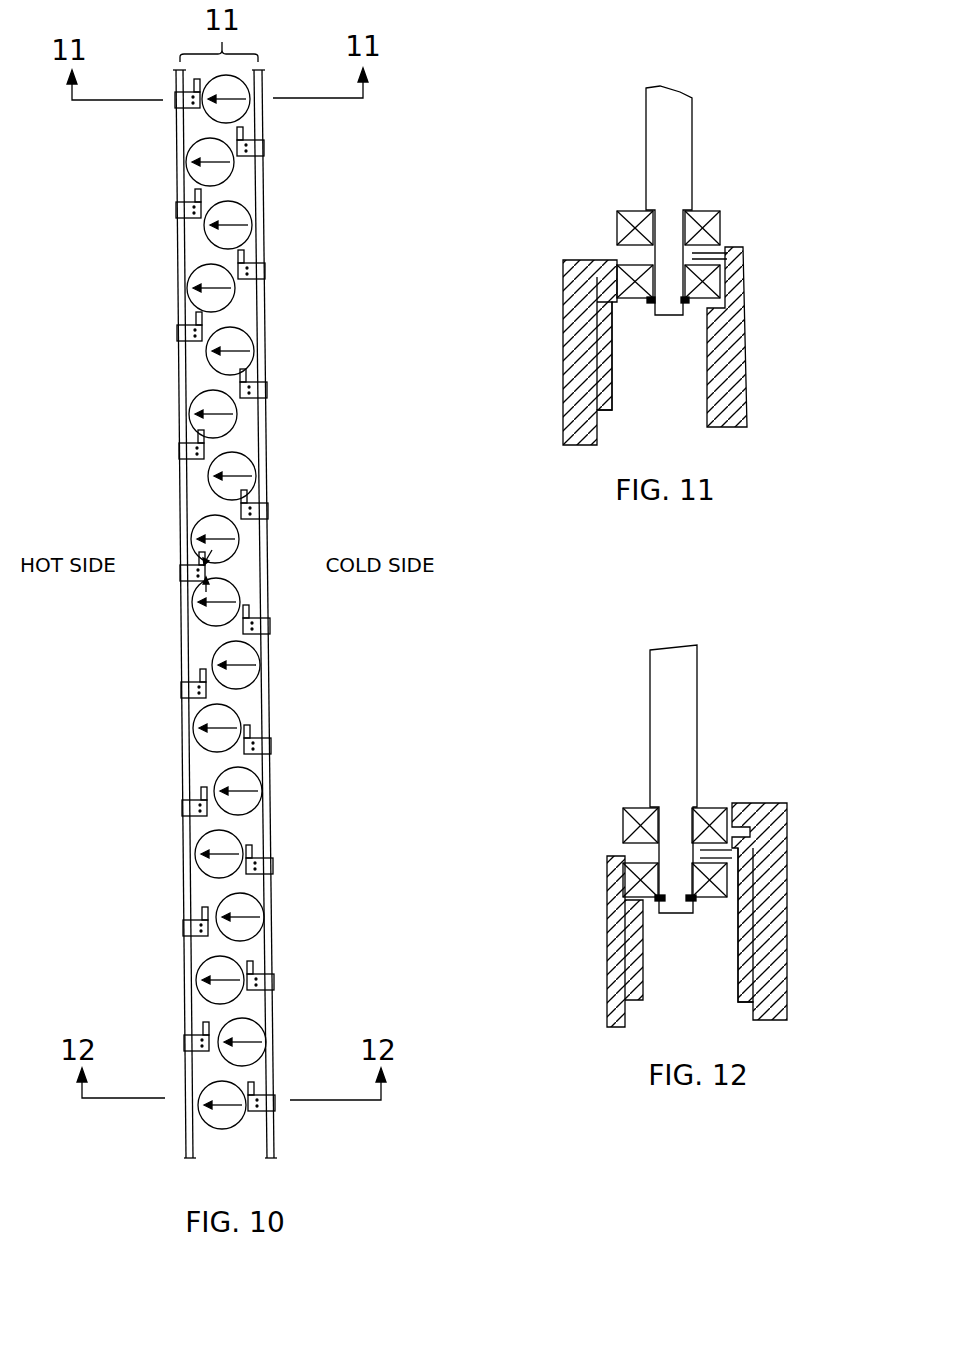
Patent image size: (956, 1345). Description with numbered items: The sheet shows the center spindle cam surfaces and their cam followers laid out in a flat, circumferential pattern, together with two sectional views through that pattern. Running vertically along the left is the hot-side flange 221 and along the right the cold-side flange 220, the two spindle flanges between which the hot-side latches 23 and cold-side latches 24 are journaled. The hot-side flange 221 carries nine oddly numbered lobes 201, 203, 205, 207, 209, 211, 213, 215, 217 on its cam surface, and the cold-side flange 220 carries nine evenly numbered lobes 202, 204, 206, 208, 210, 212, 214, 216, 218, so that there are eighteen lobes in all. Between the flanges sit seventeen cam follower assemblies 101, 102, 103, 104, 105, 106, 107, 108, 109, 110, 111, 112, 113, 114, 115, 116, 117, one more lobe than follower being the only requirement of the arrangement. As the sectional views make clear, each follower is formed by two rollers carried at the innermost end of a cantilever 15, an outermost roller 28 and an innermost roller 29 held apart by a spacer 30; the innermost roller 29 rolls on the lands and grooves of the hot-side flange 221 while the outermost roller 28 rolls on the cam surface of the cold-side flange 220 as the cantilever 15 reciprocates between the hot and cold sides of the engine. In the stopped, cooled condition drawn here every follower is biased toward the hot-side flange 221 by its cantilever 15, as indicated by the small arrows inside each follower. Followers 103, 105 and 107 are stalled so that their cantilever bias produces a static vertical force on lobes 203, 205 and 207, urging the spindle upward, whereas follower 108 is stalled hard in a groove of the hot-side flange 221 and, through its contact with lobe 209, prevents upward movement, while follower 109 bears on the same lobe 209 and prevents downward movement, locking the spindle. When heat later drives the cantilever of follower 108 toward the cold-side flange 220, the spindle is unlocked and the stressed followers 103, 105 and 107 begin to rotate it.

In FIG. 11, the cantilever 15 is at (678, 92).
In FIG. 12, the cantilever 15 is at (698, 700).
In FIG. 10, the hot-side latch 23 is at (196, 82).
In FIG. 11, the hot-side latch 23 is at (612, 370).
In FIG. 10, the cold-side latch 24 is at (240, 133).
In FIG. 12, the cold-side latch 24 is at (740, 955).
In FIG. 11, the outermost roller 28 is at (722, 222).
In FIG. 12, the outermost roller 28 is at (632, 808).
In FIG. 11, the innermost roller 29 is at (700, 300).
In FIG. 12, the innermost roller 29 is at (625, 880).
In FIG. 11, the spacer 30 is at (745, 258).
In FIG. 12, the spacer 30 is at (732, 855).
In FIG. 10, the cam follower assembly 101 is at (181, 130).
In FIG. 11, the cam follower assembly 101 is at (600, 246).
In FIG. 10, the cam follower assembly 102 is at (253, 187).
In FIG. 10, the cam follower assembly 103 is at (181, 254).
In FIG. 10, the cam follower assembly 104 is at (253, 310).
In FIG. 10, the cam follower assembly 105 is at (180, 378).
In FIG. 10, the cam follower assembly 106 is at (258, 438).
In FIG. 10, the cam follower assembly 107 is at (180, 497).
In FIG. 10, the cam follower assembly 108 is at (260, 563).
In FIG. 10, the cam follower assembly 109 is at (174, 635).
In FIG. 10, the cam follower assembly 110 is at (275, 693).
In FIG. 10, the cam follower assembly 111 is at (180, 760).
In FIG. 10, the cam follower assembly 112 is at (278, 822).
In FIG. 10, the cam follower assembly 113 is at (180, 887).
In FIG. 10, the cam follower assembly 114 is at (278, 945).
In FIG. 10, the cam follower assembly 115 is at (180, 1008).
In FIG. 10, the cam follower assembly 116 is at (281, 1067).
In FIG. 10, the cam follower assembly 117 is at (182, 1137).
In FIG. 12, the cam follower assembly 117 is at (612, 846).
In FIG. 10, the hot-side flange lobe 201 is at (176, 104).
In FIG. 11, the hot-side flange lobe 201 is at (572, 262).
In FIG. 10, the cold-side flange lobe 202 is at (264, 152).
In FIG. 10, the hot-side flange lobe 203 is at (177, 212).
In FIG. 10, the cold-side flange lobe 204 is at (265, 275).
In FIG. 10, the hot-side flange lobe 205 is at (178, 338).
In FIG. 10, the cold-side flange lobe 206 is at (267, 395).
In FIG. 10, the hot-side flange lobe 207 is at (179, 458).
In FIG. 10, the cold-side flange lobe 208 is at (268, 515).
In FIG. 10, the hot-side flange lobe 209 is at (181, 578).
In FIG. 10, the cold-side flange lobe 210 is at (270, 633).
In FIG. 10, the hot-side flange lobe 211 is at (182, 695).
In FIG. 10, the cold-side flange lobe 212 is at (271, 750).
In FIG. 10, the hot-side flange lobe 213 is at (183, 812).
In FIG. 10, the cold-side flange lobe 214 is at (272, 870).
In FIG. 10, the hot-side flange lobe 215 is at (184, 933).
In FIG. 10, the cold-side flange lobe 216 is at (274, 985).
In FIG. 10, the hot-side flange lobe 217 is at (185, 1048).
In FIG. 10, the cold-side flange lobe 218 is at (275, 1108).
In FIG. 12, the cold-side flange lobe 218 is at (758, 803).
In FIG. 10, the cold-side flange 220 is at (268, 493).
In FIG. 10, the hot-side flange 221 is at (181, 745).